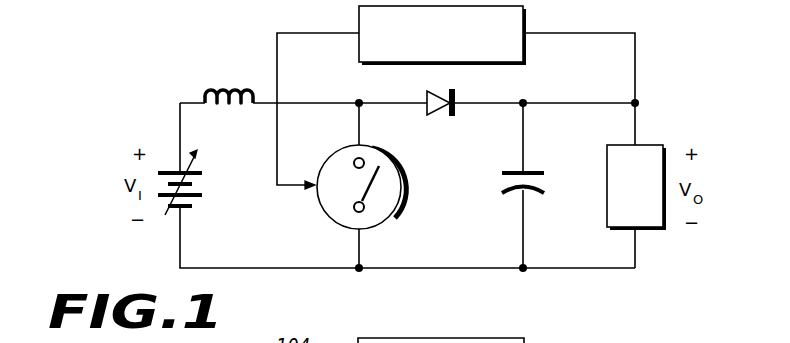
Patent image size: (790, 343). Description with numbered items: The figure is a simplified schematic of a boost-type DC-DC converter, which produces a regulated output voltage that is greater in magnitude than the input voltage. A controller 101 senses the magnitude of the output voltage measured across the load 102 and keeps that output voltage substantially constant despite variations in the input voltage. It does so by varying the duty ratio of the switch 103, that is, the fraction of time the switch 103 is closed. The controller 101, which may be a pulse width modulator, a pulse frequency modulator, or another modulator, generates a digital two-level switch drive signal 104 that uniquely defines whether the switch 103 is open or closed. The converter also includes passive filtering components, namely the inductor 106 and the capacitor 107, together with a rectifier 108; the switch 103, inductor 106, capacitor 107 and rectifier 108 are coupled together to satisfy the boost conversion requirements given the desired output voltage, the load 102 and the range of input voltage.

The controller 101 is at (527, 58).
The load 102 is at (652, 145).
The switch 103 is at (397, 222).
The switch drive signal 104 is at (316, 31).
The inductor 106 is at (224, 88).
The capacitor 107 is at (537, 170).
The rectifier 108 is at (434, 114).